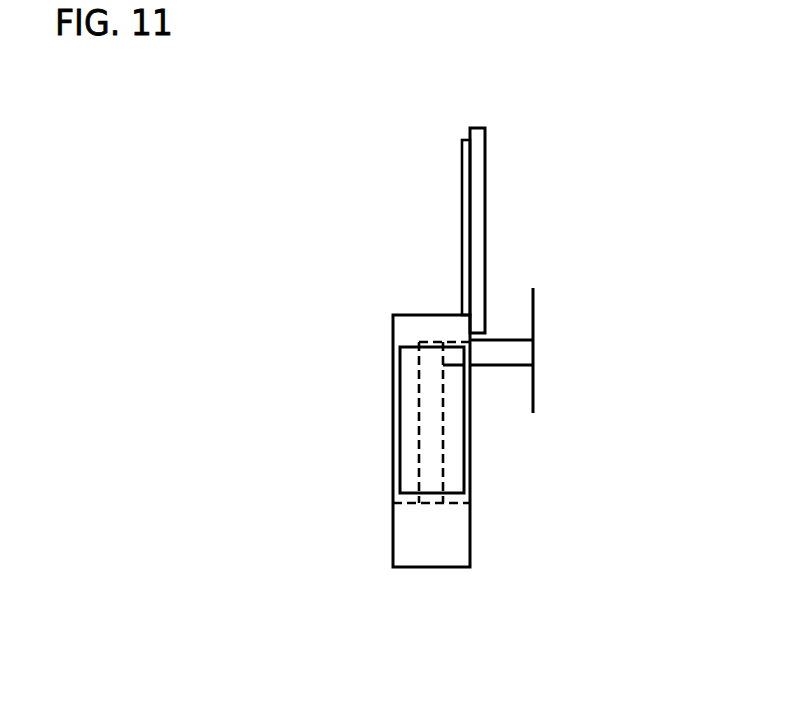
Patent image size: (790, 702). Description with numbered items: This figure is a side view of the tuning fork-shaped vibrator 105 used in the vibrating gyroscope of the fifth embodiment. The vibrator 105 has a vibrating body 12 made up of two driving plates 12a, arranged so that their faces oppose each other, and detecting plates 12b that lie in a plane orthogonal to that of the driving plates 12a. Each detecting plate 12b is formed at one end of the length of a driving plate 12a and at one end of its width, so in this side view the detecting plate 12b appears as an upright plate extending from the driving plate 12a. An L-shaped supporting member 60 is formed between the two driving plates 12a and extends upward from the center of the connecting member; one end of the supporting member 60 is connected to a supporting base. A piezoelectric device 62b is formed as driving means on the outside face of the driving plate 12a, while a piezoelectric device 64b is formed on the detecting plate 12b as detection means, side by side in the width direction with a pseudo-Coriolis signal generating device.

The tuning fork-shaped vibrator 105 is at (176, 147).
The vibrating body 12 is at (487, 130).
The driving plate 12a is at (399, 327).
The detecting plate 12b is at (478, 193).
The L-shaped supporting member 60 is at (500, 355).
The piezoelectric device 62b is at (402, 445).
The piezoelectric device 64b is at (467, 233).